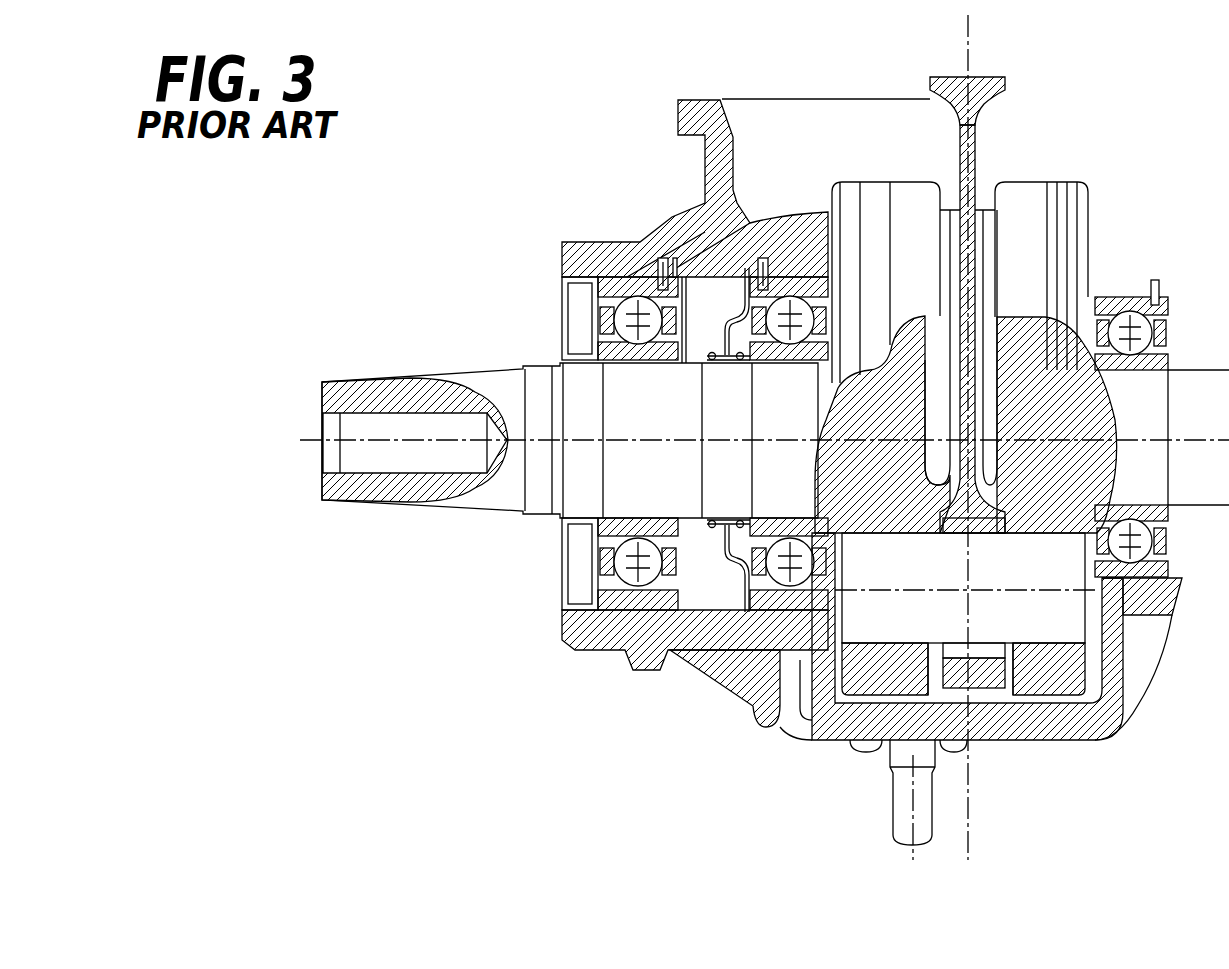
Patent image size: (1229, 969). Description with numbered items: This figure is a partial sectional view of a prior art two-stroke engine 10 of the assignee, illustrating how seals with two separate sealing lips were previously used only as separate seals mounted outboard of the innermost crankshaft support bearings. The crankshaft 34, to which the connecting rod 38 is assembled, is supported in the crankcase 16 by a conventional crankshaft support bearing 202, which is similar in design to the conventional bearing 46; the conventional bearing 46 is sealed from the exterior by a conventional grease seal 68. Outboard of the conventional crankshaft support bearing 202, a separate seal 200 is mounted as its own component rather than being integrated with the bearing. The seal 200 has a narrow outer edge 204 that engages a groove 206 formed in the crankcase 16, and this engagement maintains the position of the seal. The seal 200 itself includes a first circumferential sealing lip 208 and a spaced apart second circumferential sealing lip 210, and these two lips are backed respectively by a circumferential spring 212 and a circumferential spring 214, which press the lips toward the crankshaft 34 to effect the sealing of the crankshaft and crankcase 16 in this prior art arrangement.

The two-stroke engine 10 is at (579, 126).
The crankcase 16 is at (613, 237).
The crankshaft 34 is at (666, 512).
The connecting rod 38 is at (980, 680).
The conventional bearing 46 is at (628, 598).
The grease seal 68 is at (562, 580).
The seal 200 is at (673, 258).
The crankshaft support bearing 202 is at (795, 277).
The narrow outer edge 204 is at (815, 283).
The groove 206 is at (752, 270).
The first circumferential sealing lip 208 is at (703, 365).
The second circumferential sealing lip 210 is at (740, 345).
The circumferential spring 212 is at (705, 350).
The circumferential spring 214 is at (763, 347).